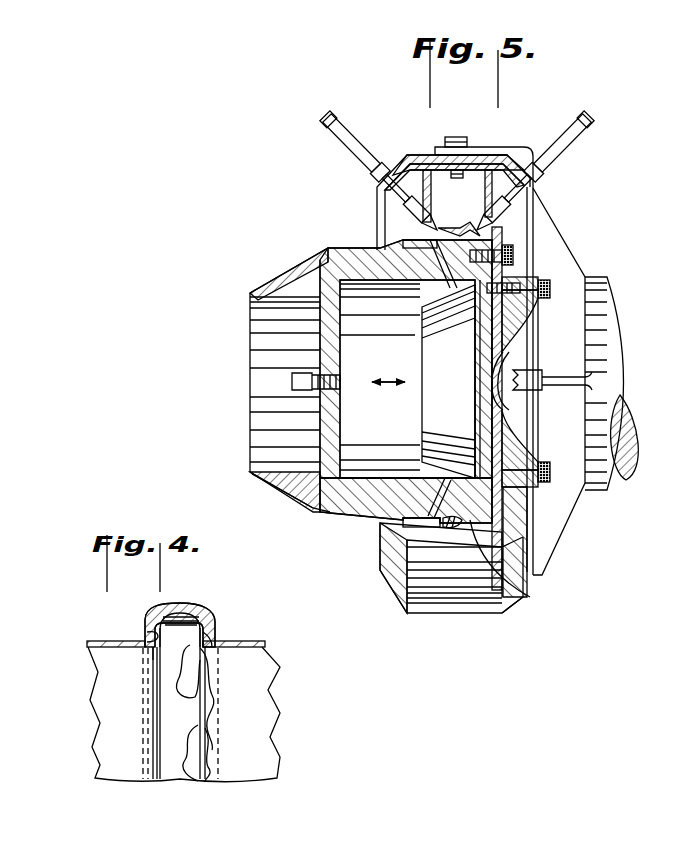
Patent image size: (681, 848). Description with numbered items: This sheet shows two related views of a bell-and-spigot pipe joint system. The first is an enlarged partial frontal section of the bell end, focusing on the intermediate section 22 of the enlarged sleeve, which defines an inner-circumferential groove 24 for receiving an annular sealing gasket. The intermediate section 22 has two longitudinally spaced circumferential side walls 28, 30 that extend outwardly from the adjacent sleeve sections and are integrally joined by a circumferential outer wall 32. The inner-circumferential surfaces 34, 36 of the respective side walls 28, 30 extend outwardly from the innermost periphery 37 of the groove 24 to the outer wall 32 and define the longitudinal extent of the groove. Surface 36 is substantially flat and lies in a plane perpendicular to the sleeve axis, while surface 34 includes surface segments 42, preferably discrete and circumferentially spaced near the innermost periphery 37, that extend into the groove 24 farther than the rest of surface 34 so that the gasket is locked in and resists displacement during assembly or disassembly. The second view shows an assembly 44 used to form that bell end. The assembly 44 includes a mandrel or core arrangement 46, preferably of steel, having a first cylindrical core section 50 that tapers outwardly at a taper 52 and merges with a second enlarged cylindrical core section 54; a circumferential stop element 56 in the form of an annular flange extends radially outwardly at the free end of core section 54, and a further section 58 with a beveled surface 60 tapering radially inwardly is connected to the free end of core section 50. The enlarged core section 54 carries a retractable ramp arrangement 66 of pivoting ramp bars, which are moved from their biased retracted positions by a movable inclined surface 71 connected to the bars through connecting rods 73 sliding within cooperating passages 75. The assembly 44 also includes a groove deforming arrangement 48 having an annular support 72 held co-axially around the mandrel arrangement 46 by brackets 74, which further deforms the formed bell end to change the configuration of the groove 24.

In FIG. 4, the intermediate section 22 is at (197, 593).
In FIG. 4, the inner-circumferential groove 24 is at (173, 757).
In FIG. 4, the circumferential side wall 28 is at (217, 628).
In FIG. 4, the circumferential side wall 30 is at (150, 615).
In FIG. 4, the circumferential outer wall 32 is at (194, 607).
In FIG. 4, the inner-circumferential surface 34 is at (208, 617).
In FIG. 4, the inner-circumferential surface 36 is at (150, 637).
In FIG. 4, the innermost periphery 37 is at (155, 655).
In FIG. 4, the surface segments 42 is at (178, 695).
In FIG. 5, the assembly 44 is at (216, 238).
In FIG. 5, the mandrel or core arrangement 46 is at (298, 247).
In FIG. 5, the groove deforming arrangement 48 is at (402, 130).
In FIG. 5, the first cylindrical core section 50 is at (345, 498).
In FIG. 5, the taper 52 is at (379, 527).
In FIG. 5, the second enlarged cylindrical core section 54 is at (500, 560).
In FIG. 5, the circumferential stop element 56 is at (504, 230).
In FIG. 5, the further section 58 is at (291, 486).
In FIG. 5, the beveled surface 60 is at (273, 285).
In FIG. 5, the retractable ramp arrangement 66 is at (410, 336).
In FIG. 5, the movable inclined surface 71 is at (426, 416).
In FIG. 5, the annular support 72 is at (483, 173).
In FIG. 5, the connecting rods 73 is at (447, 475).
In FIG. 5, the brackets 74 is at (509, 151).
In FIG. 5, the passages 75 is at (412, 472).